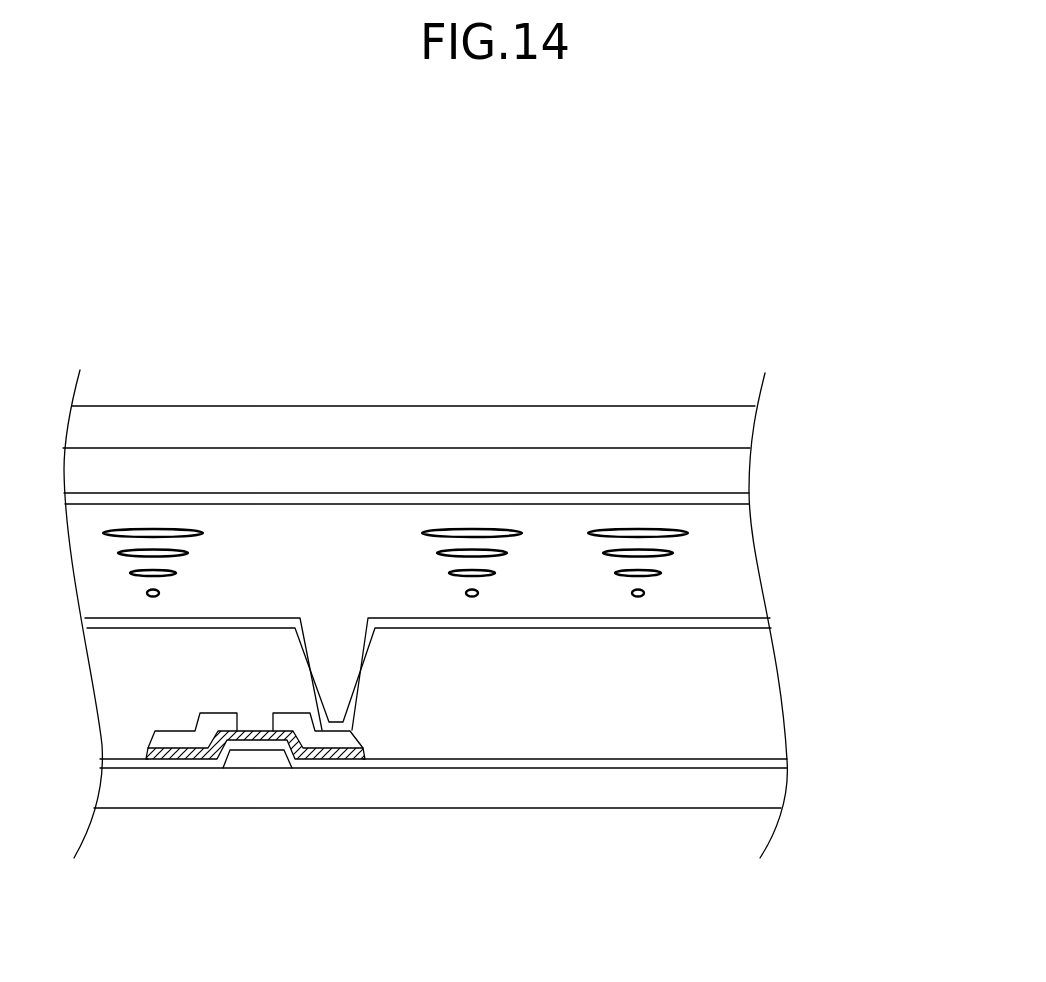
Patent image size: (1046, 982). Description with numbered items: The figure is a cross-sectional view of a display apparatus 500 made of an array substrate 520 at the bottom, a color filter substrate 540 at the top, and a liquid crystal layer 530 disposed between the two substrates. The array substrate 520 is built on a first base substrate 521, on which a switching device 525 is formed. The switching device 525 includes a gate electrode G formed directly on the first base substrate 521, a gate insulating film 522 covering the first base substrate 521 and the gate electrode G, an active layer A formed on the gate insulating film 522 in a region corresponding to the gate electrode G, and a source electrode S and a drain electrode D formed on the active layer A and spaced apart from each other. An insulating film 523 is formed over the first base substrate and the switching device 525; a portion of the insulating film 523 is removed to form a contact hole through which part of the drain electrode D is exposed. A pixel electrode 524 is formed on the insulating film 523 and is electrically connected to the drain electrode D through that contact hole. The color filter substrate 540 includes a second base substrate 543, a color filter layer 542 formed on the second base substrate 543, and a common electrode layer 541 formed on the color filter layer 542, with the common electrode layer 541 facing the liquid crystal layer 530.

The display apparatus 500 is at (362, 385).
The color filter substrate 540 is at (498, 487).
The second base substrate 543 is at (740, 430).
The color filter layer 542 is at (738, 473).
The common electrode layer 541 is at (465, 511).
The liquid crystal layer 530 is at (745, 547).
The array substrate 520 is at (509, 713).
The pixel electrode 524 is at (763, 624).
The insulating film 523 is at (767, 670).
The gate insulating film 522 is at (778, 763).
The first base substrate 521 is at (480, 765).
The switching device 525 is at (269, 825).
The source electrode S is at (163, 742).
The gate electrode G is at (255, 762).
The active layer A is at (320, 757).
The drain electrode D is at (332, 799).